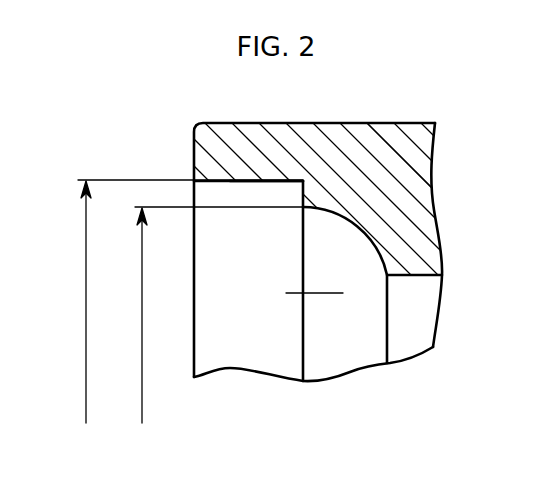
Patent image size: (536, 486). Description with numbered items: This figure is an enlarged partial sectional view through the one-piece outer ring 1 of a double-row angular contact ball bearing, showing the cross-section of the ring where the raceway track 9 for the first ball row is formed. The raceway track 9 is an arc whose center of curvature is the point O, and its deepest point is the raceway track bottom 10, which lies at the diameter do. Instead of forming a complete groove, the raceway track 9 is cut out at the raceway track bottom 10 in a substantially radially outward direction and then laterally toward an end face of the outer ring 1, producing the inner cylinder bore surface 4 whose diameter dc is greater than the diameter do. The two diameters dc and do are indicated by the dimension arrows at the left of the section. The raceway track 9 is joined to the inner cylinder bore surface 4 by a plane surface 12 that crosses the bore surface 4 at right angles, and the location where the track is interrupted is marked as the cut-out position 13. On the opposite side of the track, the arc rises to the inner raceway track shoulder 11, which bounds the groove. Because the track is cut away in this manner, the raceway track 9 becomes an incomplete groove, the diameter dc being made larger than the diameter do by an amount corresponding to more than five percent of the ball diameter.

The outer ring 1 is at (366, 150).
The inner cylinder bore surface 4 is at (223, 187).
The raceway track 9 is at (368, 238).
The raceway track bottom 10 is at (323, 209).
The inner raceway track shoulder 11 is at (415, 277).
The plane surface 12 is at (289, 187).
The cut-out position 13 is at (303, 208).
The center of curvature O is at (303, 293).
The diameter of the bore surface dc is at (177, 301).
The diameter of the raceway track bottom do is at (204, 315).